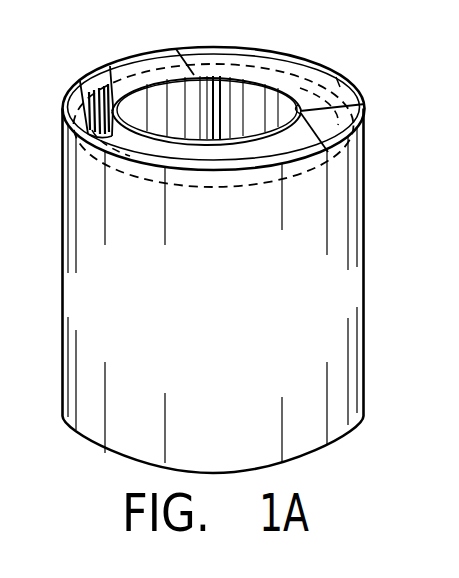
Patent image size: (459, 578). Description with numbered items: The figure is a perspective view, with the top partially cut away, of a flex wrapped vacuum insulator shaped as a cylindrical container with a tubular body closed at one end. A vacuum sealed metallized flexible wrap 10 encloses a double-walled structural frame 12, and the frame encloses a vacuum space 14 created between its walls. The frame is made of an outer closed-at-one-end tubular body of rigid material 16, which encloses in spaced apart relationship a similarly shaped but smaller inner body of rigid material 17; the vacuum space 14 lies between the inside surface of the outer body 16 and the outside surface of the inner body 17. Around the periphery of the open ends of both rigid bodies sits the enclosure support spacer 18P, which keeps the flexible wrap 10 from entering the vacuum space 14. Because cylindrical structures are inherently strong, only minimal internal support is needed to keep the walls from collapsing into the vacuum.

The vacuum sealed metallized flexible wrap 10 is at (362, 119).
The double-walled structural frame 12 is at (83, 78).
The vacuum space 14 is at (88, 113).
The outer closed at one end tubular shaped body of rigid material 16 is at (127, 60).
The inner body of rigid material 17 is at (80, 89).
The enclosure support spacer 18P is at (323, 84).